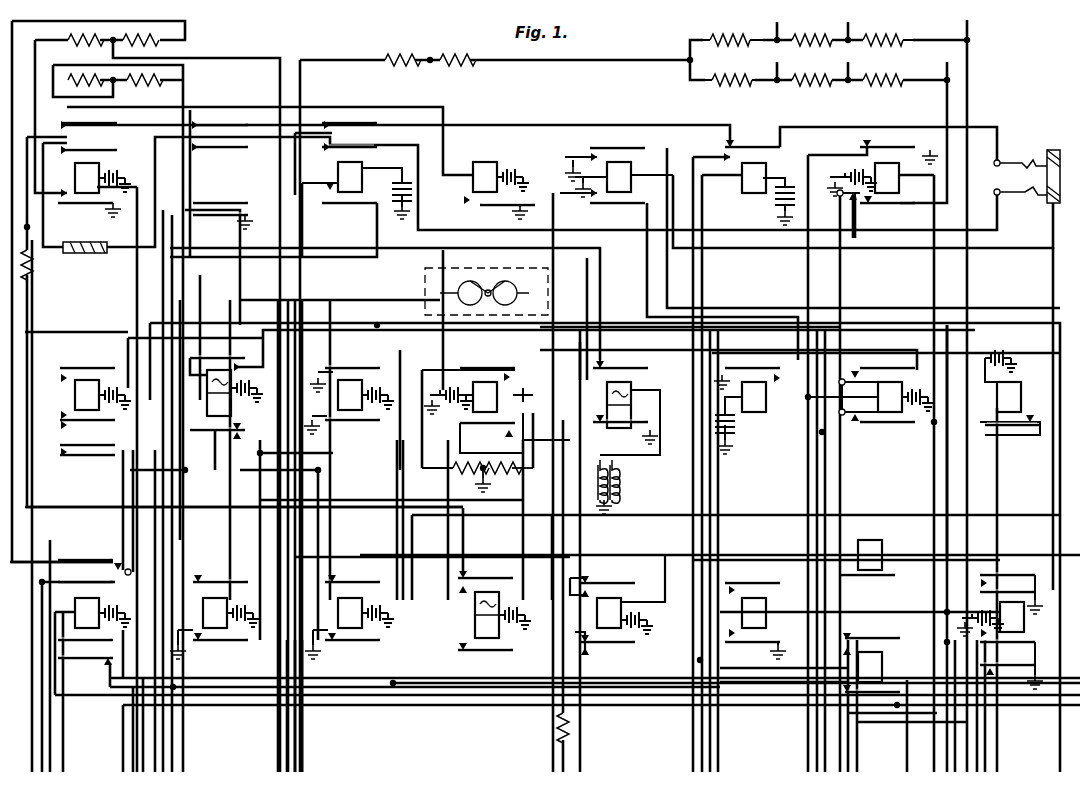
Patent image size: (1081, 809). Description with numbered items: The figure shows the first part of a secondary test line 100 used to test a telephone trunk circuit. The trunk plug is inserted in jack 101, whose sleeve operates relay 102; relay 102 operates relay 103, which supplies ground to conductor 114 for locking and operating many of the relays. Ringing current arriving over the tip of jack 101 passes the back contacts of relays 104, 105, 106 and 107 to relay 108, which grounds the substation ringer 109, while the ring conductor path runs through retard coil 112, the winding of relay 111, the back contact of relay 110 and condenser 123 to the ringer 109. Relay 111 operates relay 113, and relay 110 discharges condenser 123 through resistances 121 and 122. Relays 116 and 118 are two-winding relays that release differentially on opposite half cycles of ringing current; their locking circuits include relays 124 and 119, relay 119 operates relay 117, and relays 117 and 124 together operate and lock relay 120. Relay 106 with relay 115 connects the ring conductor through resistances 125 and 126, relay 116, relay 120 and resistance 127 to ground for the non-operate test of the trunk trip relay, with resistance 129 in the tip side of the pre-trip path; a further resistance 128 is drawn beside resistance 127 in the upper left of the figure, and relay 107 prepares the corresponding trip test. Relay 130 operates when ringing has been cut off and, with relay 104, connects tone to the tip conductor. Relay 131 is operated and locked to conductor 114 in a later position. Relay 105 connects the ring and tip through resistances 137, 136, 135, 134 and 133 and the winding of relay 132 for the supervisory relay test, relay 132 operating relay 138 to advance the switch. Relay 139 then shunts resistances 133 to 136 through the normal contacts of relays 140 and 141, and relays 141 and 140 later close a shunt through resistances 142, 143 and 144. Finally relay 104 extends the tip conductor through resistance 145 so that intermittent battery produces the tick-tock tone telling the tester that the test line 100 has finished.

The test line 100 is at (540, 392).
The jack 101 is at (1036, 160).
The relay 102 is at (622, 160).
The relay 103 is at (1010, 600).
The relay 104 is at (750, 190).
The relay 105 is at (350, 193).
The relay 106 is at (220, 210).
The relay 107 is at (87, 193).
The relay 108 is at (487, 160).
The substation ringer 109 is at (425, 294).
The relay 110 is at (482, 410).
The relay 111 is at (620, 428).
The retard coil 112 is at (85, 255).
The relay 113 is at (86, 378).
The conductor 114 is at (945, 475).
The relay 115 is at (218, 630).
The relay 116 is at (218, 368).
The relay 117 is at (348, 378).
The relay 118 is at (490, 640).
The relay 119 is at (350, 630).
The relay 120 is at (90, 630).
The resistance 121 is at (458, 472).
The resistance 122 is at (512, 472).
The condenser 123 is at (533, 400).
The relay 124 is at (754, 630).
The resistance 125 is at (82, 76).
The resistance 126 is at (158, 79).
The resistance 127 is at (148, 38).
The resistor 128 is at (72, 36).
The resistance 129 is at (30, 268).
The relay 130 is at (612, 596).
The relay 131 is at (882, 664).
The relay 132 is at (878, 542).
The resistance 133 is at (888, 29).
The resistance 134 is at (812, 29).
The resistance 135 is at (733, 29).
The resistance 136 is at (460, 49).
The resistance 137 is at (403, 49).
The relay 138 is at (1020, 395).
The relay 139 is at (750, 412).
The relay 140 is at (890, 412).
The relay 141 is at (882, 193).
The resistance 142 is at (730, 70).
The resistance 143 is at (812, 70).
The resistance 144 is at (883, 70).
The resistance 145 is at (575, 733).